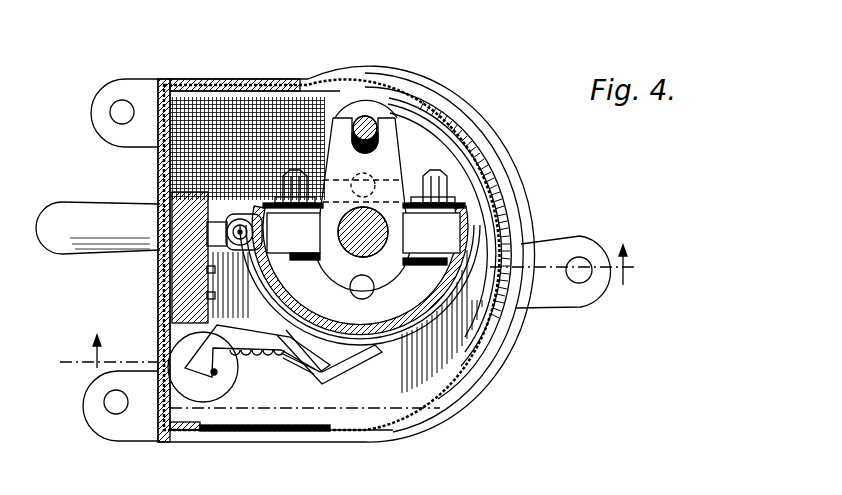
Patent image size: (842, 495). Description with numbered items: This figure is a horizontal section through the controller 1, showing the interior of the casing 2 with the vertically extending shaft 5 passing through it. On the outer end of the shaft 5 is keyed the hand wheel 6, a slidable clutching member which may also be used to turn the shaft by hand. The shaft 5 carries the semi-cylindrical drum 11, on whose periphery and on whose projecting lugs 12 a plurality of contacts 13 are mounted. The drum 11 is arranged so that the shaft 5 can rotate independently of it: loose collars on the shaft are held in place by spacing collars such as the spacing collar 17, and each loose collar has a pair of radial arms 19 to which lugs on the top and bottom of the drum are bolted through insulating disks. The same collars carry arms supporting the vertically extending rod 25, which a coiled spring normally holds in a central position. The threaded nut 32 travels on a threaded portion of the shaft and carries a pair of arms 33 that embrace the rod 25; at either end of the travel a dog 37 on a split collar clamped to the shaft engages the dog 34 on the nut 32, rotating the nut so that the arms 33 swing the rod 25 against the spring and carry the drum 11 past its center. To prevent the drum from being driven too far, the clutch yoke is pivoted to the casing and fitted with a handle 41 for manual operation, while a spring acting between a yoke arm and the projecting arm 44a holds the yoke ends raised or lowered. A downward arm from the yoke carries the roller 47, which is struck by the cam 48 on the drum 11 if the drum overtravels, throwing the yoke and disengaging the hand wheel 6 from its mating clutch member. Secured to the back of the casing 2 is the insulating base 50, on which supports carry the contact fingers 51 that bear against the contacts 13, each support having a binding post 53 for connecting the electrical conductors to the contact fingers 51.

The section line 1- 1 is at (357, 308).
The casing 2 is at (188, 88).
The vertically extending shaft 5 is at (490, 172).
The hand wheel 6 is at (437, 96).
The semi-cylindrical drum 11 is at (420, 305).
The projecting lugs 12 is at (445, 262).
The contacts 13 is at (403, 343).
The spacing collar 17 is at (227, 326).
The radial arms 19 is at (505, 200).
The vertically extending rod 25 is at (368, 118).
The threaded nut 32 is at (342, 155).
The arms 33 is at (388, 122).
The dog 34 is at (435, 178).
The dog 37 is at (352, 287).
The handle 41 is at (112, 247).
The projecting arm 44a is at (497, 190).
The roller 47 is at (237, 215).
The cam 48 is at (455, 182).
The base 50 is at (173, 196).
The contact fingers 51 is at (340, 363).
The binding post 53 is at (215, 373).